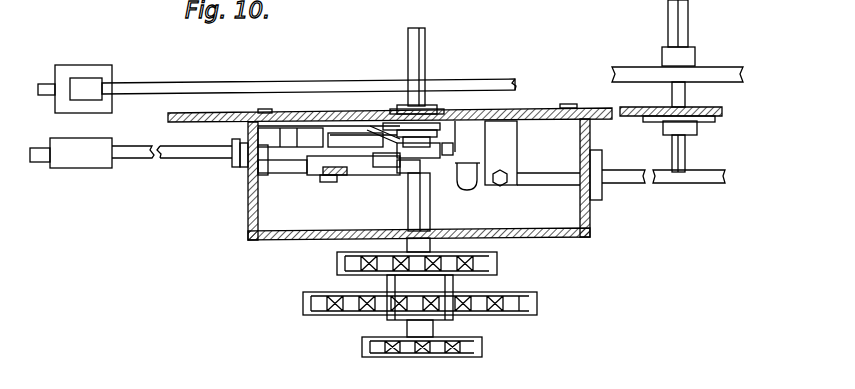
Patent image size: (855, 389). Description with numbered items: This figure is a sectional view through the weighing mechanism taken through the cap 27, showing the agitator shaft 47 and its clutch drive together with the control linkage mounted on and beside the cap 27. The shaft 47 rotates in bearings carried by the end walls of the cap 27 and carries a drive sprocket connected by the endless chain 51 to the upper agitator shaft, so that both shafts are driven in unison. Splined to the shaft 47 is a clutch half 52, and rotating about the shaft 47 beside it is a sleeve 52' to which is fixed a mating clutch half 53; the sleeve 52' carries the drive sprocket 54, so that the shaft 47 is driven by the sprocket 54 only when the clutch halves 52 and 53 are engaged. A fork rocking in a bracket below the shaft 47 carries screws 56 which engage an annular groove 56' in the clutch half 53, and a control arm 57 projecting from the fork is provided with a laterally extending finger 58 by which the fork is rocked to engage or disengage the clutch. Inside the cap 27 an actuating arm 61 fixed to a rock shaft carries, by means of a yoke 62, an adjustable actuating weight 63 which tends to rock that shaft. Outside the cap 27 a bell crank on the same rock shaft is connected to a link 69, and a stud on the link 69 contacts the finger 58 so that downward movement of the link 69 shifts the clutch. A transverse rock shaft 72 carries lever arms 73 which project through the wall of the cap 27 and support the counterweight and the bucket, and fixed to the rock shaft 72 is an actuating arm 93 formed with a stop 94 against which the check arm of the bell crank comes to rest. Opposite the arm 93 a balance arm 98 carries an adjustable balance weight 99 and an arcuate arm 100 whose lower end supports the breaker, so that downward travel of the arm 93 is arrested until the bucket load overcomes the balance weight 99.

The cap 27 is at (318, 113).
The shaft 47 is at (423, 68).
The endless chain 51 is at (460, 358).
The clutch half 52 is at (461, 164).
The sleeve 52' is at (397, 212).
The clutch half 53 is at (427, 170).
The drive sprocket 54 is at (336, 263).
The screws 56 is at (423, 147).
The annular groove 56' is at (402, 175).
The control arm 57 is at (372, 130).
The finger 58 is at (353, 113).
The actuating arm 61 is at (276, 82).
The yoke 62 is at (88, 91).
The actuating weight 63 is at (102, 66).
The link 69 is at (332, 178).
The rock shaft 72 is at (687, 154).
The lever arms 73 is at (730, 71).
The actuating arm 93 is at (637, 184).
The stop 94 is at (477, 173).
The balance arm 98 is at (183, 152).
The balance weight 99 is at (80, 162).
The arcuate arm 100 is at (298, 164).